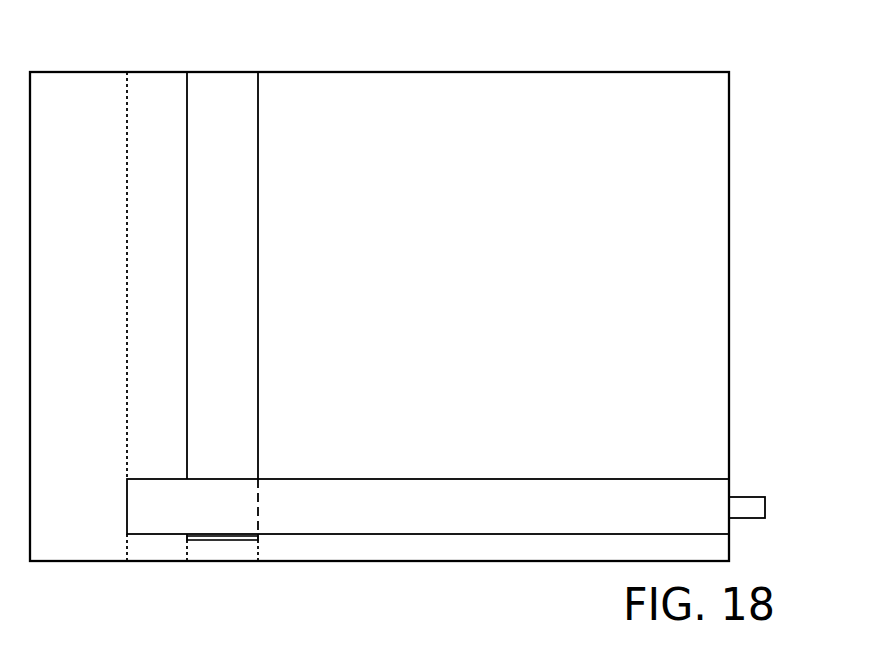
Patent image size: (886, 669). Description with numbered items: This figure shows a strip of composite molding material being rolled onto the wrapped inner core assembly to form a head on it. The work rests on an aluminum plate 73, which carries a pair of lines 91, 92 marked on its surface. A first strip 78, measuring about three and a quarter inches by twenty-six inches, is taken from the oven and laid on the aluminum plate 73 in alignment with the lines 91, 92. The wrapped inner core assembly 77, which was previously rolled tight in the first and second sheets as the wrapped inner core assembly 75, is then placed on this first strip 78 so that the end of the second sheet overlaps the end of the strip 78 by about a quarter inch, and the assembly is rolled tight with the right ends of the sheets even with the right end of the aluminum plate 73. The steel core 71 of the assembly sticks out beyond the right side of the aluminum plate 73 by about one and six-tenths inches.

The steel core 71 is at (768, 492).
The aluminum plate 73 is at (507, 553).
The wrapped inner core assembly 75 is at (498, 485).
The wrapped inner core assembly 77 is at (467, 468).
The strips 78 is at (254, 349).
The line 91 is at (187, 550).
The line 92 is at (260, 553).